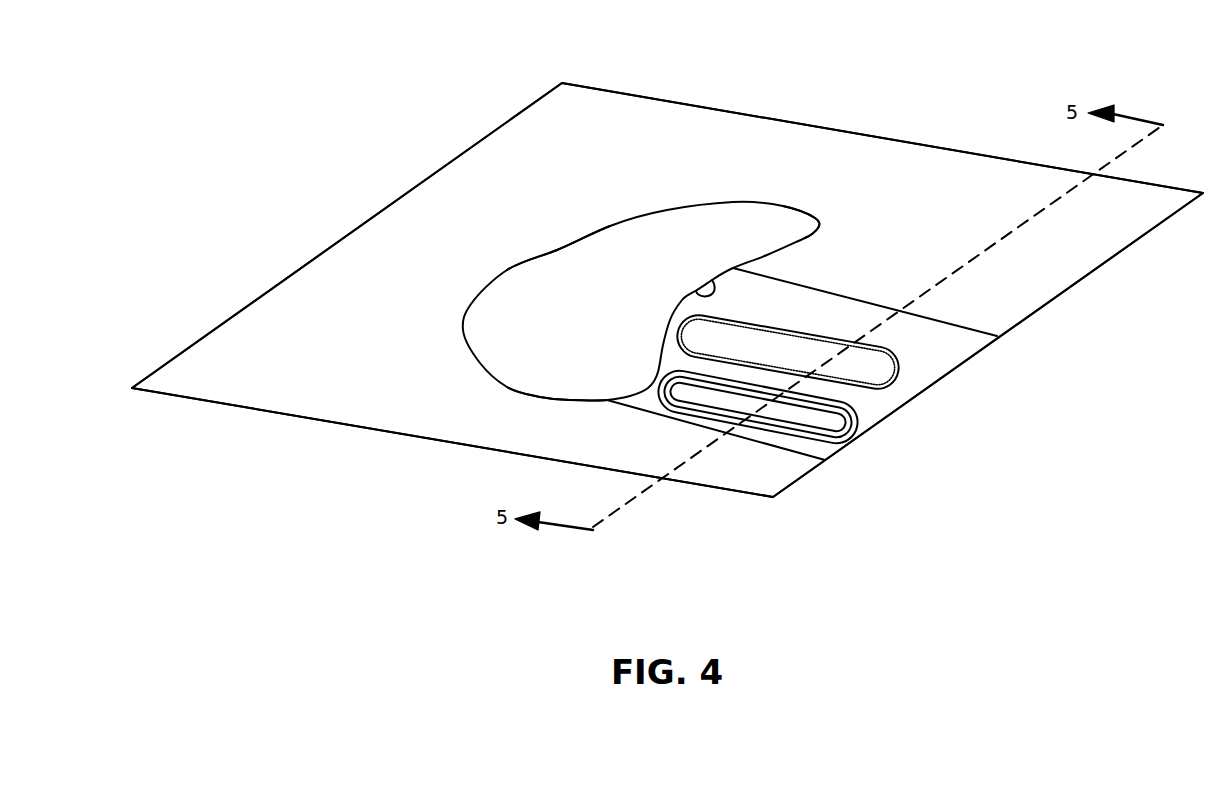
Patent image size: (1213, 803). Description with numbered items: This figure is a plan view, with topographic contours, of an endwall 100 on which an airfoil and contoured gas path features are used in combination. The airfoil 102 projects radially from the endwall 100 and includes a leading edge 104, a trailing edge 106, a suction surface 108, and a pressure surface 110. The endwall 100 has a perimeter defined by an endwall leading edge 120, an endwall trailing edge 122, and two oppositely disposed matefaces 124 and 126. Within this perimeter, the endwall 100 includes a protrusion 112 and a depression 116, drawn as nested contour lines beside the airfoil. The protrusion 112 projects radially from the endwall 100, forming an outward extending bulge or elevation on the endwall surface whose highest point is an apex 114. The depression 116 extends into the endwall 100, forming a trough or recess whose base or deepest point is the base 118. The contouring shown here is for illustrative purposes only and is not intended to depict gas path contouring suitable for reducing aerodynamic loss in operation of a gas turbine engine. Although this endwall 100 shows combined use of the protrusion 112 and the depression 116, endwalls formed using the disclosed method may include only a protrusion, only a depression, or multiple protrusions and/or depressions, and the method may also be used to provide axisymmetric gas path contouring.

The endwall 100 is at (615, 120).
The airfoil 102 is at (612, 258).
The leading edge 104 is at (522, 393).
The trailing edge 106 is at (817, 222).
The suction surface 108 is at (557, 250).
The pressure surface 110 is at (713, 283).
The protrusion 112 is at (853, 433).
The apex 114 is at (793, 415).
The depression 116 is at (853, 340).
The base 118 is at (768, 353).
The endwall leading edge 120 is at (395, 437).
The endwall trailing edge 122 is at (790, 120).
The mateface 124 is at (1058, 296).
The mateface 126 is at (383, 210).